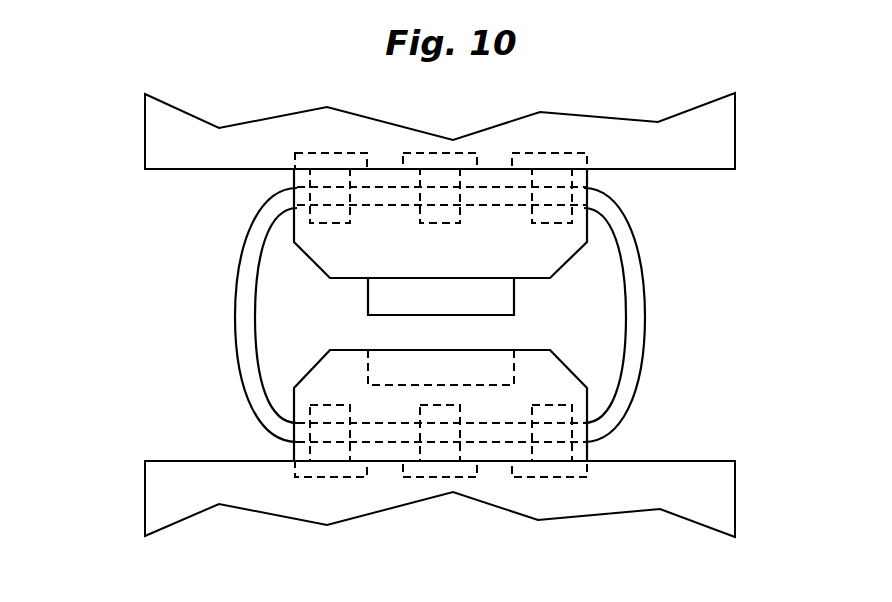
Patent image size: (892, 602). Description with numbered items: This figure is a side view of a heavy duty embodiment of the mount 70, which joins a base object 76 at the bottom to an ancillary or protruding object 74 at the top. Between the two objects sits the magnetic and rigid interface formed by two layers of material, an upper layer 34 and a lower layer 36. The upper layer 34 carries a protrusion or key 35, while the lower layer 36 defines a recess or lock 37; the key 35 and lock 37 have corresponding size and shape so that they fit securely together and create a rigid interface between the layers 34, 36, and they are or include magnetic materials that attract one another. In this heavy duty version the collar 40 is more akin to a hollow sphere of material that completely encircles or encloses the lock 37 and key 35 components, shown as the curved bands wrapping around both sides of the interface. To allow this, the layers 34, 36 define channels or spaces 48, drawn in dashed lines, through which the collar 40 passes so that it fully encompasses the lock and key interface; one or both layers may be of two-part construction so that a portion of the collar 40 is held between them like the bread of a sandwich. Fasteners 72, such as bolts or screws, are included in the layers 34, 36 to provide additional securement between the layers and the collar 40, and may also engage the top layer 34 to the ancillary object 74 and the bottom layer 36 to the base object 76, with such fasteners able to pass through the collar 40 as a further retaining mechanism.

The mount 70 is at (141, 280).
The fasteners 72 is at (325, 158).
The ancillary object 74 is at (718, 124).
The base object 76 is at (690, 505).
The channels 48 is at (492, 188).
The layer 34 is at (440, 223).
The key 35 is at (515, 298).
The layer 36 is at (440, 405).
The lock 37 is at (503, 388).
The collar 40 is at (645, 293).